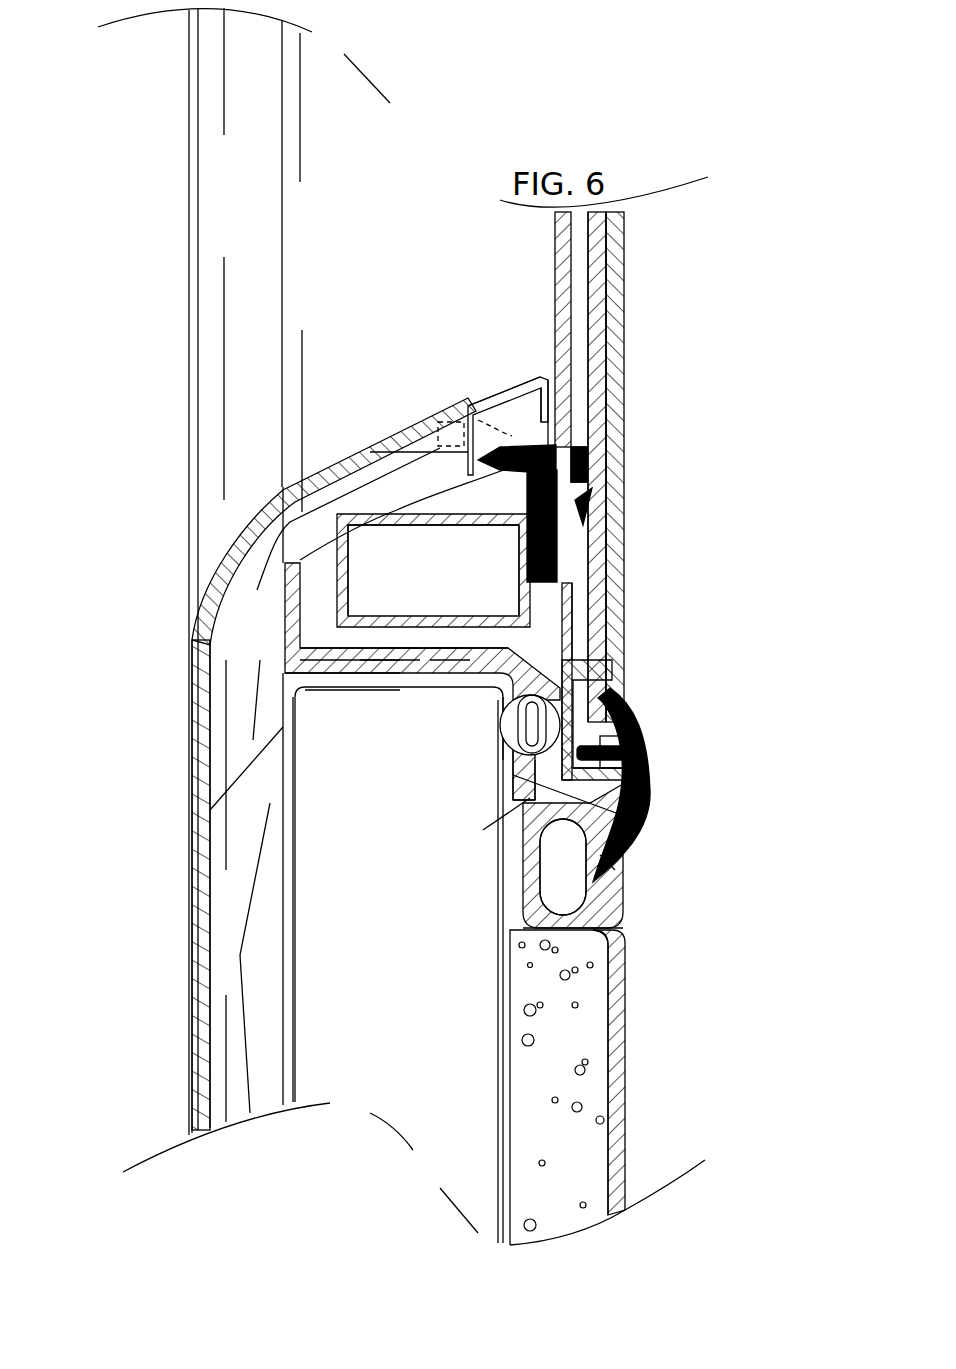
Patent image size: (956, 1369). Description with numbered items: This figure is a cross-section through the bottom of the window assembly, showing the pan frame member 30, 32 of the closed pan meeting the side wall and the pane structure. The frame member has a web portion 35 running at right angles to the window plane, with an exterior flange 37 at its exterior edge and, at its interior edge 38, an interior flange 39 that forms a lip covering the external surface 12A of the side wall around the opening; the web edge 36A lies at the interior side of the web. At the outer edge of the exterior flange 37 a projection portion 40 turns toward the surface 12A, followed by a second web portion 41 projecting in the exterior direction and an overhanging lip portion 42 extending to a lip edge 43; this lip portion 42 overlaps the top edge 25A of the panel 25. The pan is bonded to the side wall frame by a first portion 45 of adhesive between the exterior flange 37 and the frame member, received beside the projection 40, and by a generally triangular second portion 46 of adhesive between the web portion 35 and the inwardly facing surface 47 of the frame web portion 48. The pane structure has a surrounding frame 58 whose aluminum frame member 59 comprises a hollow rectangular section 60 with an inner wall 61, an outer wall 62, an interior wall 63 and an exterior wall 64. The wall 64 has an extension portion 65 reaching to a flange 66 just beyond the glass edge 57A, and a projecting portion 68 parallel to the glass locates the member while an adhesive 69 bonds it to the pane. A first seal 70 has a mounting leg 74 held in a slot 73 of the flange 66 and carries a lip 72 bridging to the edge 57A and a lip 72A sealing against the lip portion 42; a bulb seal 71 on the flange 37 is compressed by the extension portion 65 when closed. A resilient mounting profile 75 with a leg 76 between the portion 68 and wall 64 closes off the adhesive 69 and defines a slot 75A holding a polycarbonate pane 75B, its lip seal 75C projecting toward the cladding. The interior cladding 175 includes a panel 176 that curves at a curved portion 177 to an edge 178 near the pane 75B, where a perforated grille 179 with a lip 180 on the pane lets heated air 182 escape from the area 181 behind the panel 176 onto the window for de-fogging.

The exterior surface 12A is at (510, 760).
The panel 25 is at (612, 1010).
The top edge 25A is at (527, 905).
The channel member 30 is at (360, 667).
The frame member 32 is at (418, 677).
The web portion 35 is at (451, 665).
The panel edge 36A is at (290, 690).
The exterior flange 37 is at (503, 705).
The interior edge 38 is at (310, 677).
The interior flange 39 is at (283, 588).
The projection portion 40 is at (515, 770).
The second web portion 41 is at (545, 790).
The lip portion 42 is at (627, 888).
The lip edge 43 is at (622, 928).
The first portion of adhesive 45 is at (600, 692).
The second portion of adhesive 46 is at (398, 665).
The inwardly facing surface 47 is at (344, 677).
The web portion 48 is at (394, 680).
The edge of the glass pane 57A is at (615, 718).
The rectangular surrounding frame 58 is at (613, 259).
The frame member 59 is at (583, 592).
The hollow rectangular section 60 is at (433, 570).
The inner wall 61 is at (413, 522).
The outer wall 62 is at (446, 640).
The interior wall 63 is at (350, 583).
The exterior wall 64 is at (522, 574).
The extension portion 65 is at (570, 613).
The flange 66 is at (640, 735).
The projecting portion 68 is at (602, 522).
The adhesive 69 is at (604, 582).
The first seal 70 is at (628, 805).
The bulb seal 71 is at (520, 778).
The lip 72 is at (650, 732).
The lip 72A is at (620, 862).
The slot 73 is at (636, 815).
The mounting leg 74 is at (640, 750).
The resilient mounting profile 75 is at (610, 492).
The slot 75A is at (577, 458).
The pane of polycarbonate 75B is at (572, 352).
The lip seal 75C is at (453, 417).
The leg 76 is at (515, 537).
The interior cladding 175 is at (185, 850).
The panel 176 is at (192, 985).
The curved portion 177 is at (376, 433).
The edge 178 is at (487, 390).
The perforated grille 179 is at (517, 387).
The lip 180 is at (567, 410).
The area 181 is at (276, 978).
The heated air 182 is at (258, 855).